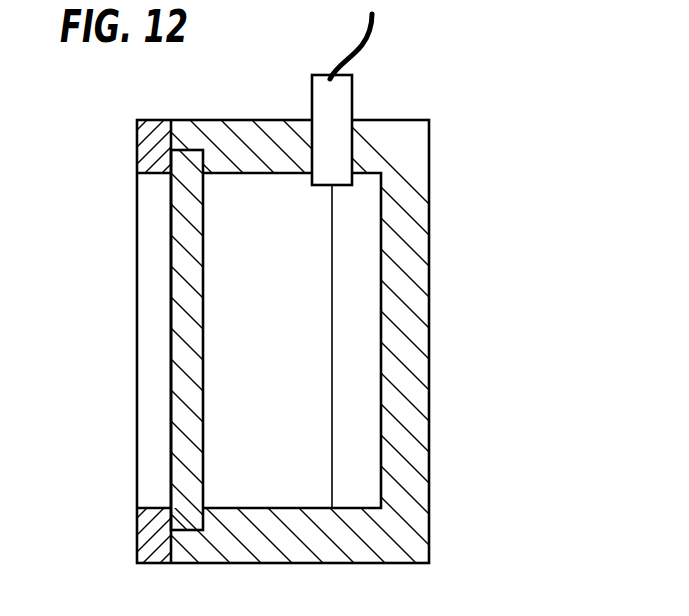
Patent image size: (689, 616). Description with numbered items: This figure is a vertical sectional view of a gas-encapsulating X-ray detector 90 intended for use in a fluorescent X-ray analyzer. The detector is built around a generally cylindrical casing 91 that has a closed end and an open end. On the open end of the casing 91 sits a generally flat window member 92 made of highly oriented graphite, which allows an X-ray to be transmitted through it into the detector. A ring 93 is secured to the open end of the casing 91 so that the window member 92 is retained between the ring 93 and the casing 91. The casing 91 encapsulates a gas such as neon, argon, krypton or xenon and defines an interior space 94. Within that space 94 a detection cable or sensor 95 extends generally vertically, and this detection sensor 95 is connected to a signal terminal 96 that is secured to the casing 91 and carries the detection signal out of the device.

The X-ray detector 90 is at (452, 265).
The casing 91 is at (404, 153).
The window member 92 is at (178, 247).
The ring 93 is at (150, 525).
The space 94 is at (287, 435).
The detection sensor 95 is at (332, 378).
The signal terminal 96 is at (355, 98).